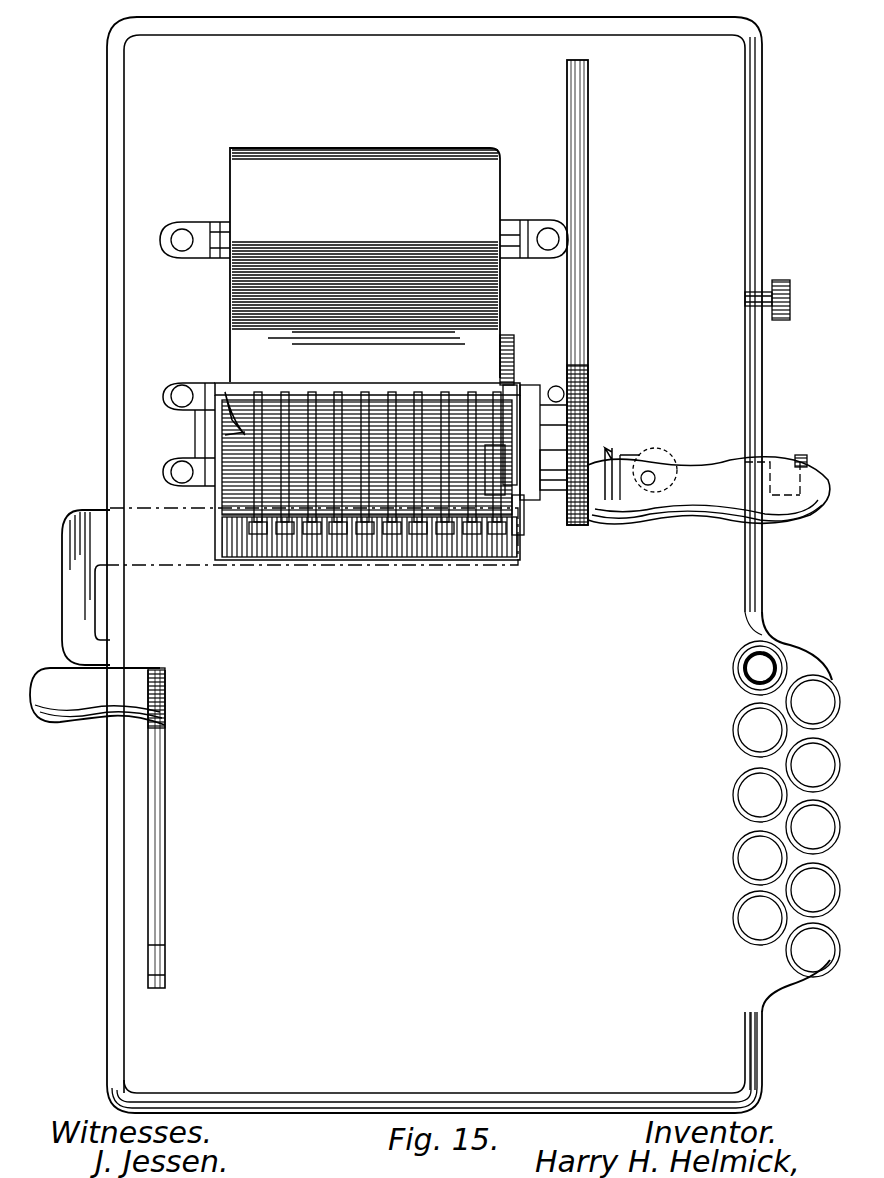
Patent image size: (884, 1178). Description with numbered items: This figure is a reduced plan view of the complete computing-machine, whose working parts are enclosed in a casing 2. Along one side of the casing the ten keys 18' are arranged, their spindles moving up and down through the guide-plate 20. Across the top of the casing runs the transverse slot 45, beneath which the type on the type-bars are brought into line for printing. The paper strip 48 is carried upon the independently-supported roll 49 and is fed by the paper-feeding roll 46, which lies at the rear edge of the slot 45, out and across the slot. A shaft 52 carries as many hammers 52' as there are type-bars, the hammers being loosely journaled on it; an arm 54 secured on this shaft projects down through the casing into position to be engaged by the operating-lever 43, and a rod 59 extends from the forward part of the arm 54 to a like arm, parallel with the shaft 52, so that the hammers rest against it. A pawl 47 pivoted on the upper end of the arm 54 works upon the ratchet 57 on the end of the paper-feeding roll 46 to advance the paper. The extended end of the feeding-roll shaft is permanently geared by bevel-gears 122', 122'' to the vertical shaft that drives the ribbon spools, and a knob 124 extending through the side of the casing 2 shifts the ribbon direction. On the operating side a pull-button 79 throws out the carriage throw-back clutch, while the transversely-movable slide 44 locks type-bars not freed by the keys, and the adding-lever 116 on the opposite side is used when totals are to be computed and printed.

The casing 2 is at (778, 396).
The paper strip 48 is at (330, 265).
The roll 49 is at (505, 222).
The shaft 52 is at (600, 292).
The hammers 52' is at (372, 498).
The pull-button 79 is at (798, 274).
The transverse slot 45 is at (395, 545).
The rod 59 is at (240, 405).
The arm 54 is at (512, 390).
The pawl 47 is at (535, 430).
The operating-lever 43 is at (545, 440).
The ratchet 57 is at (522, 500).
The paper-feeding roll 46 is at (490, 490).
The bevel-gear 122' is at (709, 473).
The bevel-gear 122'' is at (637, 461).
The knob 124 is at (800, 455).
The slide 44 is at (80, 535).
The adding-lever 116 is at (165, 873).
The guide-plate 20 is at (786, 826).
The keys 18' is at (736, 668).